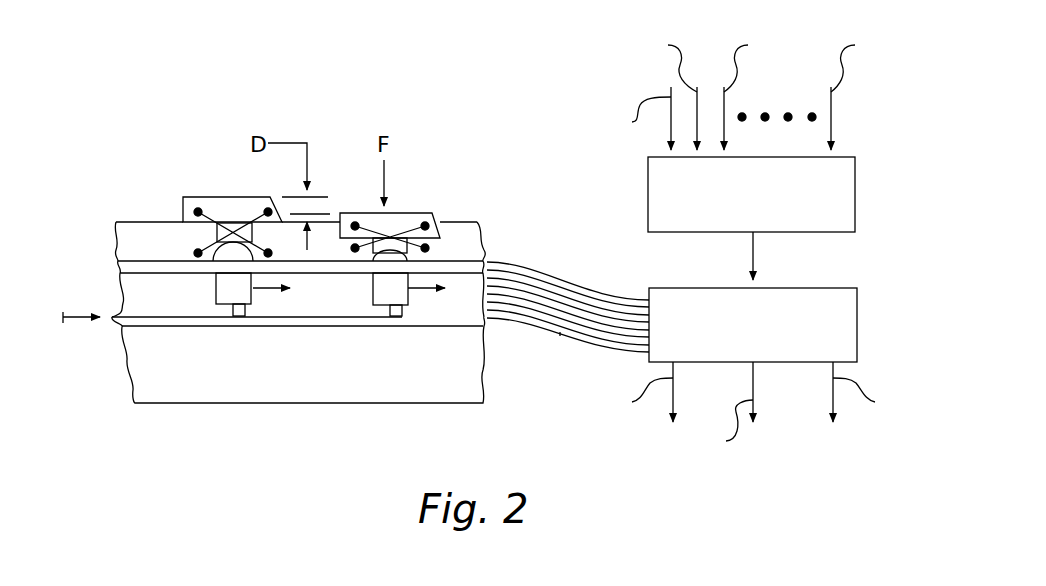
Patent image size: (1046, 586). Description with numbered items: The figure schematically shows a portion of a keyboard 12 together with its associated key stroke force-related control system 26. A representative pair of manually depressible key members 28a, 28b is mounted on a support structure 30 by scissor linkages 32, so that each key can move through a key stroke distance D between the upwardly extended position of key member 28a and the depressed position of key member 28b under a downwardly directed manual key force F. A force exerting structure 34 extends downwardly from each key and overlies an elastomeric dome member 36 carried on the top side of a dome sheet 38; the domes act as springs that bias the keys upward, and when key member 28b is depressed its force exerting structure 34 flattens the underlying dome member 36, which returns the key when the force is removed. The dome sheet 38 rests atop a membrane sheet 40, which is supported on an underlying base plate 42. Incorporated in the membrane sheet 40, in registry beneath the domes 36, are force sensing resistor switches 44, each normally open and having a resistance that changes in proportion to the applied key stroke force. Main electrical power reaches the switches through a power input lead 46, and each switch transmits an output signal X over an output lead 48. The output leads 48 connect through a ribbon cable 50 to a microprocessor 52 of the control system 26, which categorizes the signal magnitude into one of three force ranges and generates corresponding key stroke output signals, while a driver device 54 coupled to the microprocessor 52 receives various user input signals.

The keyboard 12 is at (118, 166).
The key stroke force-related control system 26 is at (598, 194).
The key member 28a is at (212, 197).
The key member 28b is at (358, 213).
The support structure 30 is at (130, 234).
The scissor linkages 32 is at (196, 212).
The force exerting structure 34 is at (225, 225).
The elastomeric dome member 36 is at (224, 260).
The dome sheet 38 is at (120, 268).
The membrane sheet 40 is at (135, 300).
The base plate 42 is at (150, 404).
The force sensing resistor (FSR) switch 44 is at (240, 318).
The power input lead 46 is at (88, 318).
The output lead 48 is at (265, 292).
The ribbon cable 50 is at (566, 342).
The microprocessor 52 is at (688, 288).
The driver device 54 is at (820, 233).